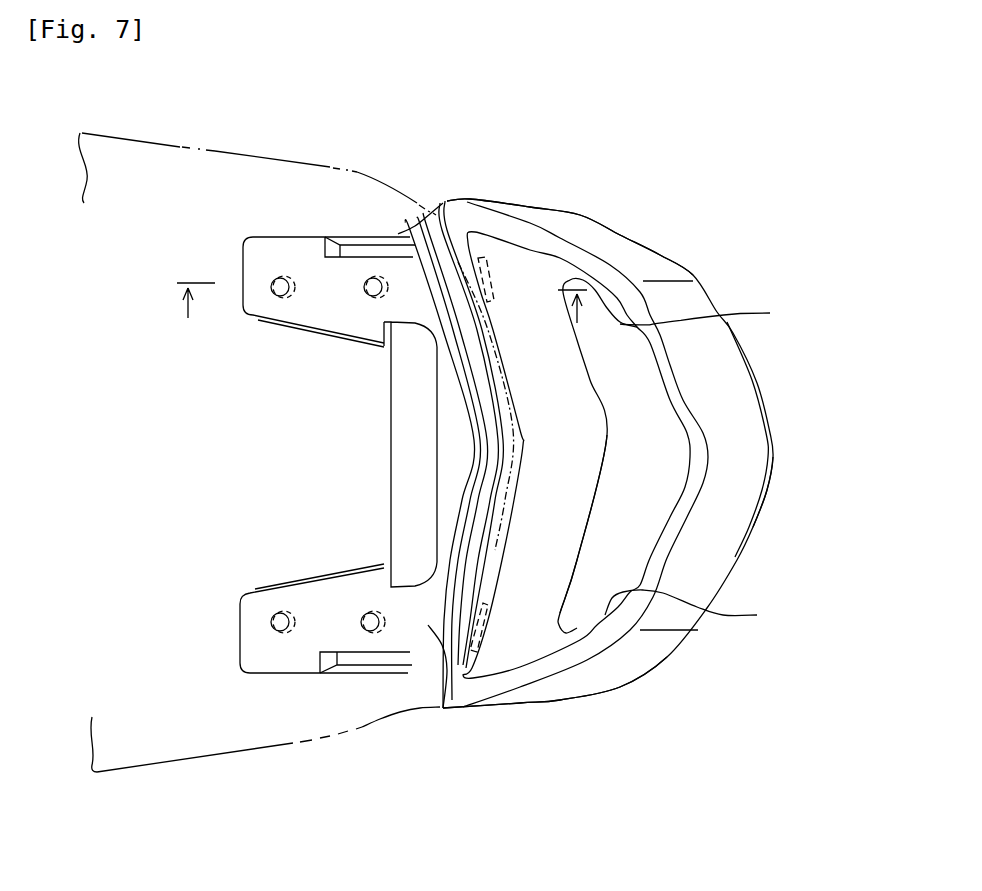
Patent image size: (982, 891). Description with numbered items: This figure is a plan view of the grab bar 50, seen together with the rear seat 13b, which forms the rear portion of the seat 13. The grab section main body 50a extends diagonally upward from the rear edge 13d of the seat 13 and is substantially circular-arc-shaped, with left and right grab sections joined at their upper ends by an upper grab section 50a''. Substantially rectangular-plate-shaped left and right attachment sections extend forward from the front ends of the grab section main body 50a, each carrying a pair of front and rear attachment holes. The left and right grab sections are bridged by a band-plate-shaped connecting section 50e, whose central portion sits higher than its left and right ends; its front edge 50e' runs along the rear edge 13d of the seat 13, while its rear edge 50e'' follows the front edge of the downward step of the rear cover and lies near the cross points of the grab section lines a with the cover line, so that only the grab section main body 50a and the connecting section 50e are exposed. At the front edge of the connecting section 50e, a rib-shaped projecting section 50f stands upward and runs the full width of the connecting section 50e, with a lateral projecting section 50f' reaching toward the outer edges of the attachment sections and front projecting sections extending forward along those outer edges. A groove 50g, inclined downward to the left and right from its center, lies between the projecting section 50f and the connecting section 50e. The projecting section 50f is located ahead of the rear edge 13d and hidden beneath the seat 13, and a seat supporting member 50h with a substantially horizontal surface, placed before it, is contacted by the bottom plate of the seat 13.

The seat 13 is at (165, 140).
The rear seat 13b is at (200, 740).
The rear edge of the seat 13d is at (507, 360).
The grab bar 50 is at (700, 245).
The grab section main body 50a is at (792, 439).
The upper grab section 50a'' is at (817, 486).
The connecting section 50e is at (602, 524).
The front edge of the connecting section 50e' is at (576, 455).
The rear edge of the connecting section 50e'' is at (616, 456).
The projecting section 50f is at (500, 434).
The lateral projecting section 50f' is at (512, 434).
The groove 50g is at (440, 630).
The seat supporting member 50h is at (403, 443).